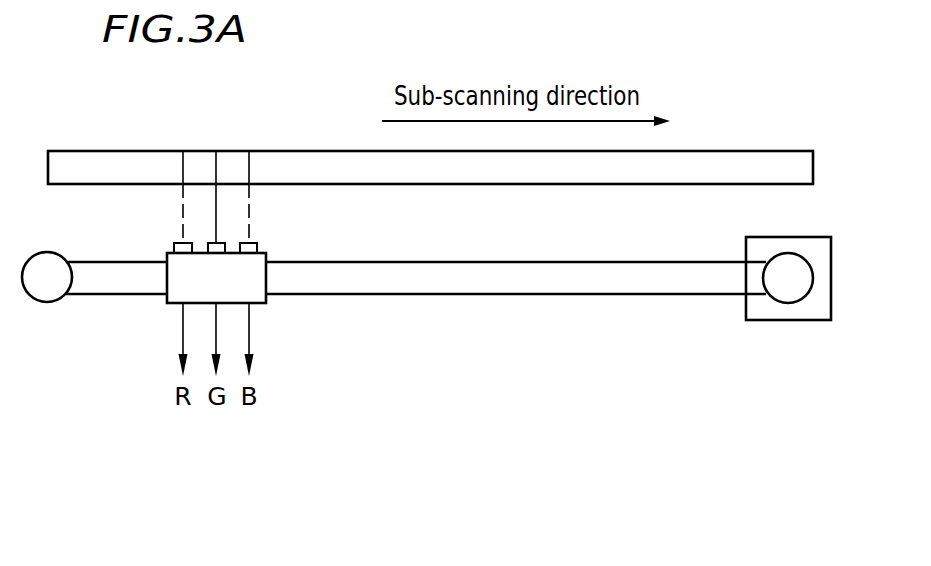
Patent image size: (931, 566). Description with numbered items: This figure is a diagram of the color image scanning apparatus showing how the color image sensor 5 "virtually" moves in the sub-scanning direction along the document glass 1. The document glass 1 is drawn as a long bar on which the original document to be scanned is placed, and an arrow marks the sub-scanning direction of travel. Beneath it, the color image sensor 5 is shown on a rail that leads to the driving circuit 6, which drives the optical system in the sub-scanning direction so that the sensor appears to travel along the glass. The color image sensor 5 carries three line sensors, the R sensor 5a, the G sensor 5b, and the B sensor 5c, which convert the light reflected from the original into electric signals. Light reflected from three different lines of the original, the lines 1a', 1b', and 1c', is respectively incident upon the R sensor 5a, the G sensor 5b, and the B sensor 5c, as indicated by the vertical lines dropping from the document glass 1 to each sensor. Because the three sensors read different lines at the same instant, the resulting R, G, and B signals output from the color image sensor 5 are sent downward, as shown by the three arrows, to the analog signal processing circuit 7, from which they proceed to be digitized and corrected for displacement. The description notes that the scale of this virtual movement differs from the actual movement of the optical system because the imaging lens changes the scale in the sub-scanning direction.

The document glass 1 is at (700, 152).
The line of the original 1a' is at (273, 166).
The line of the original 1b' is at (223, 164).
The line of the original 1c' is at (167, 167).
The color image sensor 5 is at (222, 277).
The R sensor 5a is at (252, 243).
The G sensor 5b is at (213, 253).
The B sensor 5c is at (178, 243).
The driving circuit 6 is at (813, 237).
The analog signal processing circuit 7 is at (296, 457).